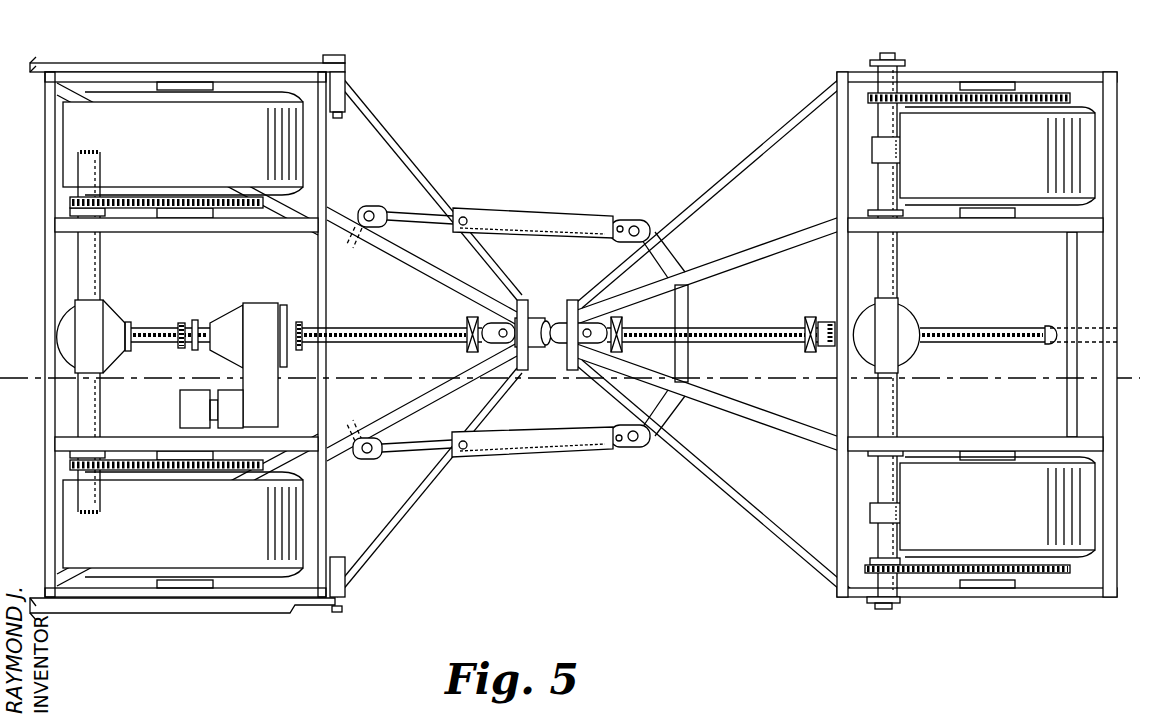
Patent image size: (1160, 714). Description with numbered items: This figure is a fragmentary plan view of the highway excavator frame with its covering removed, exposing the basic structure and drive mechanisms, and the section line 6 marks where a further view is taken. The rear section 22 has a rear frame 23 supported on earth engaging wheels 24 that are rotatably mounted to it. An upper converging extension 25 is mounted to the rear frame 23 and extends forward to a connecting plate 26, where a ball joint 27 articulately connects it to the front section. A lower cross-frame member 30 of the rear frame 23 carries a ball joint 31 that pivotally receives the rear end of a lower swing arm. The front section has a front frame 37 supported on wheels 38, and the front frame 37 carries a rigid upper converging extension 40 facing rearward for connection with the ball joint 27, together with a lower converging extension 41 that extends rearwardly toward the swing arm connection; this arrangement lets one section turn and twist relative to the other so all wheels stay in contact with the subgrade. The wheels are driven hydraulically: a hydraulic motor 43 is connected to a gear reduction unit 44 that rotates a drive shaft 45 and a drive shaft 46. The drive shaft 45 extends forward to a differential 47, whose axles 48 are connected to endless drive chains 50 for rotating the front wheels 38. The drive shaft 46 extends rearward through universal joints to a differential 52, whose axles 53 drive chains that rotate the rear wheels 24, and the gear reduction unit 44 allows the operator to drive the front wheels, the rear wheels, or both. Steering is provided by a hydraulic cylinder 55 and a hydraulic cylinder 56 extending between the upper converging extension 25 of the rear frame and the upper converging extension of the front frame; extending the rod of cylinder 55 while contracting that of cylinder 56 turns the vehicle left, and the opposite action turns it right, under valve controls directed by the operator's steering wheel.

The section line 6- 6 is at (285, 367).
The rear section 22 is at (1122, 148).
The rear frame 23 is at (1112, 258).
The wheels 24 is at (1000, 167).
The upper converging extension 25 is at (722, 190).
The connecting plate 26 is at (570, 305).
The ball joint 27 is at (540, 300).
The lower cross-frame member 30 is at (1067, 262).
The ball joint 31 is at (1043, 318).
The front frame 37 is at (48, 283).
The wheels 38 is at (244, 138).
The upper converging extension 40 is at (400, 262).
The lower converging extension 41 is at (412, 179).
The hydraulic motor 43 is at (180, 406).
The gear reduction unit 44 is at (256, 303).
The drive shaft 45 is at (142, 328).
The drive shaft 46 is at (380, 328).
The differential 47 is at (105, 310).
The axles 48 is at (101, 262).
The endless drive chains 50 is at (133, 197).
The differential 52 is at (910, 312).
The axles 53 is at (897, 262).
The hydraulic cylinder 55 is at (538, 212).
The hydraulic cylinder 56 is at (546, 453).